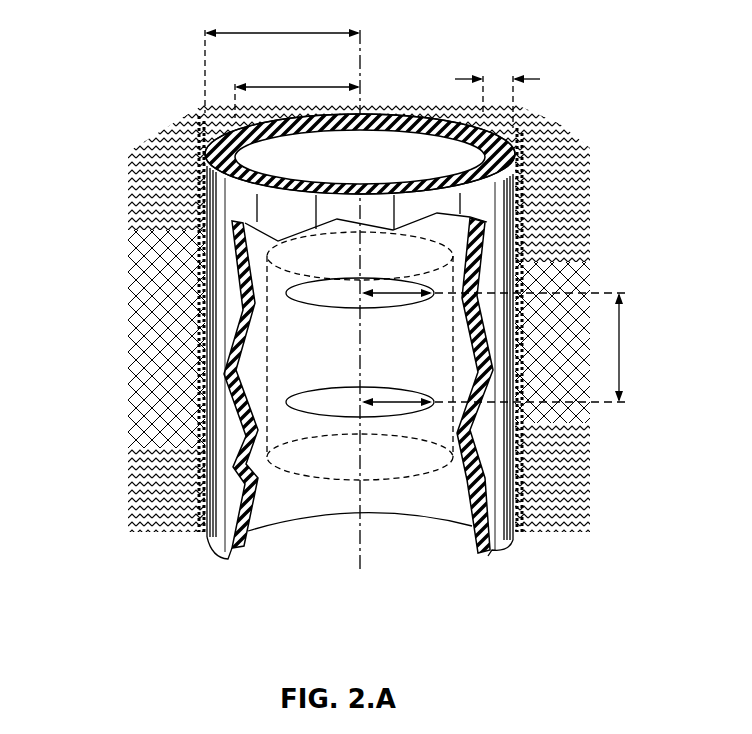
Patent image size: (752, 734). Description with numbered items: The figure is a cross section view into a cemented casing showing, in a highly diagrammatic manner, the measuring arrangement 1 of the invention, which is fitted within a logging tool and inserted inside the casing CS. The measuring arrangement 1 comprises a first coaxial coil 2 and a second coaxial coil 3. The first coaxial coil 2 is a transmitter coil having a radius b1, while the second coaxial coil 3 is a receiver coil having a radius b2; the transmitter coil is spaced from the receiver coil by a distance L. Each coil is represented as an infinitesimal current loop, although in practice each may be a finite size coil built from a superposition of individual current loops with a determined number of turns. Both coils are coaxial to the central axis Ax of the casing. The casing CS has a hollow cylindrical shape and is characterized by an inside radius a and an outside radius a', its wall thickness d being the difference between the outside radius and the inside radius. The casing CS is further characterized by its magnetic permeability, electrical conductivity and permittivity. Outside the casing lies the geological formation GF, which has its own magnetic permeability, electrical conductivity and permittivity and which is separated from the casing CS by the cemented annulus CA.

The cemented annulus CA is at (198, 142).
The geological formation GF is at (126, 168).
The casing CS is at (210, 213).
The measuring arrangement 1 is at (287, 478).
The first coaxial coil 2 is at (287, 414).
The second coaxial coil 3 is at (287, 300).
The radius of the first coaxial coil b1 is at (396, 404).
The radius of the second coaxial coil b2 is at (356, 306).
The distance L is at (540, 347).
The inside radius a is at (297, 88).
The outside radius a' is at (282, 58).
The wall thickness d is at (512, 97).
The central axis Ax is at (360, 556).